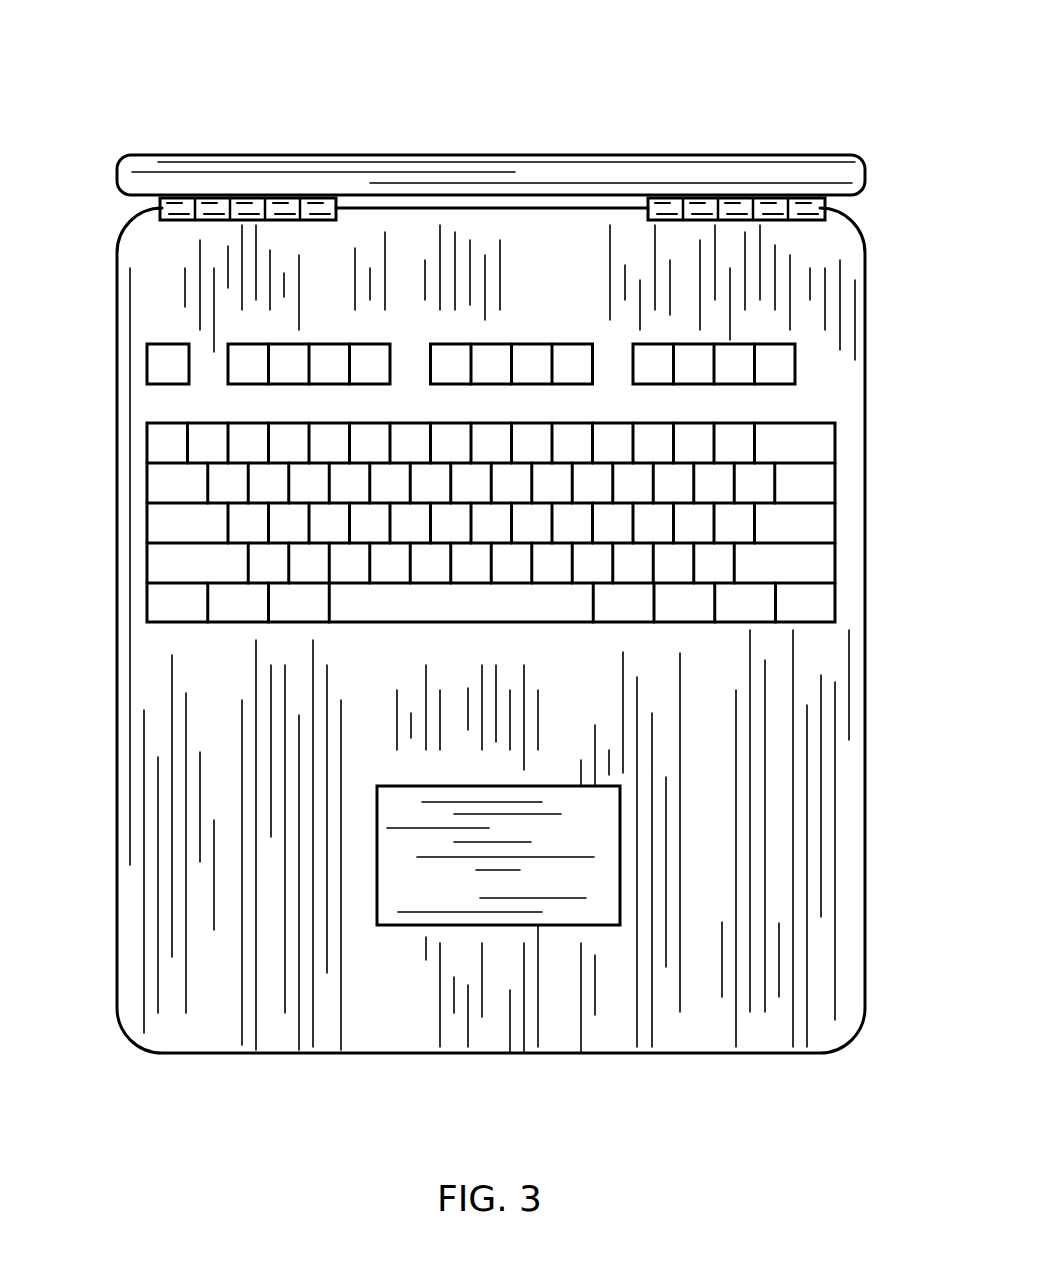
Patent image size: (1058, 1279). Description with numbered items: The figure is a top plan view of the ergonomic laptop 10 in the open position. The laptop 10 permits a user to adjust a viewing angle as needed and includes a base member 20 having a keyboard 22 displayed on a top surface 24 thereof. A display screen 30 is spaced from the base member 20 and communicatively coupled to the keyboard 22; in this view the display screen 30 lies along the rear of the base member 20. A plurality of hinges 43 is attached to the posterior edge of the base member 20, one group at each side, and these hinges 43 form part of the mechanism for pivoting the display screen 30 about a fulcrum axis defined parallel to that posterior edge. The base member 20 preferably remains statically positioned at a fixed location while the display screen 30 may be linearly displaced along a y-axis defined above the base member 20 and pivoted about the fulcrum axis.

The ergonomic laptop 10 is at (80, 88).
The base member 20 is at (205, 1037).
The keyboard 22 is at (517, 242).
The top surface 24 is at (158, 663).
The display screen 30 is at (737, 172).
The hinges 43 is at (160, 203).